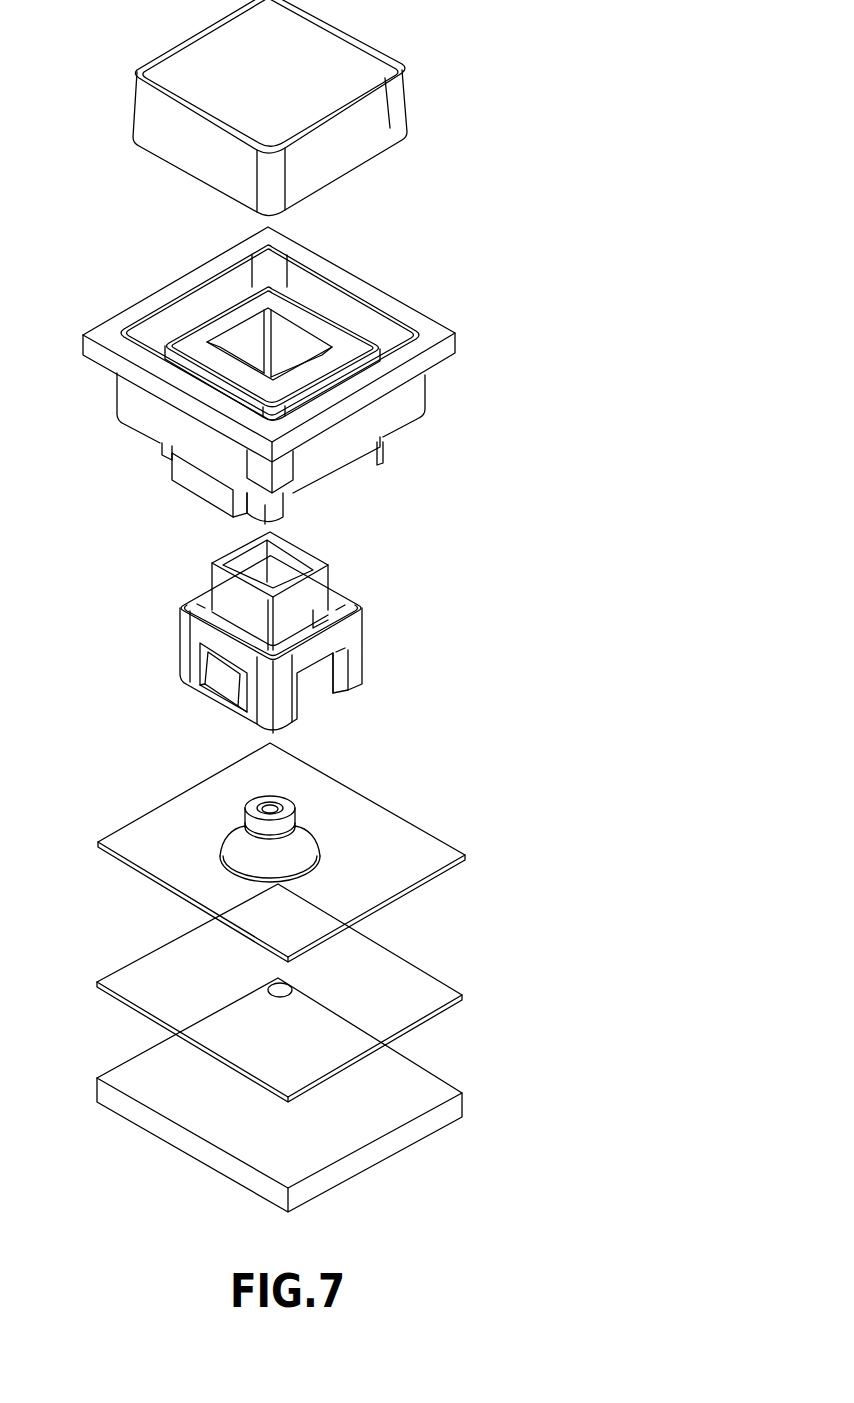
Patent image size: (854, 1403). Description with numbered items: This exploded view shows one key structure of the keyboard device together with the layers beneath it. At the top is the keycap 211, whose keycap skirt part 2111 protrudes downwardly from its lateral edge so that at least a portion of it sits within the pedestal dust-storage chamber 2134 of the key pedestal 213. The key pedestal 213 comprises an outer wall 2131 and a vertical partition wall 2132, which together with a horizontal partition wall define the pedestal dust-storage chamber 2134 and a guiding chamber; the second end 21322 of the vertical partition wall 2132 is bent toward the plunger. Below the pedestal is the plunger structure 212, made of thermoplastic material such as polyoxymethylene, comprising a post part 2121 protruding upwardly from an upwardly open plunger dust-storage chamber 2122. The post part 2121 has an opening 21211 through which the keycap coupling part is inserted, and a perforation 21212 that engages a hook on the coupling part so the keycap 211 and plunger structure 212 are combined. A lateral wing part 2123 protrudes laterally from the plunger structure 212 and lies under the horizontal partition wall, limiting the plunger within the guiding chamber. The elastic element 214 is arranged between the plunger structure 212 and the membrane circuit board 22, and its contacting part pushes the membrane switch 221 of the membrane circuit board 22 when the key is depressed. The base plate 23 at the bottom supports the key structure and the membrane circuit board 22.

The keycap 211 is at (309, 108).
The keycap skirt part 2111 is at (388, 125).
The key pedestal 213 is at (296, 360).
The second end of the vertical partition wall 21322 is at (307, 320).
The pedestal dust-storage chamber 2134 is at (392, 332).
The outer wall 2131 is at (413, 407).
The vertical partition wall 2132 is at (183, 370).
The plunger structure 212 is at (260, 630).
The opening 21211 is at (283, 565).
The post part 2121 is at (312, 583).
The plunger dust-storage chamber 2122 is at (255, 657).
The perforation 21212 is at (330, 635).
The lateral wing part 2123 is at (207, 690).
The elastic element 214 is at (290, 850).
The membrane circuit board 22 is at (279, 993).
The membrane switch 221 is at (290, 993).
The base plate 23 is at (415, 1083).